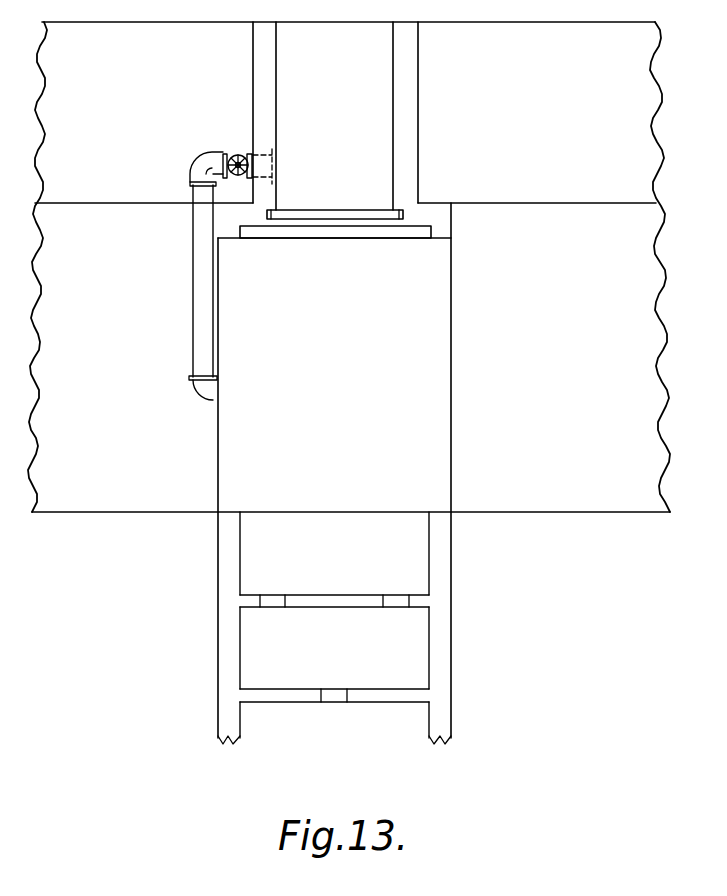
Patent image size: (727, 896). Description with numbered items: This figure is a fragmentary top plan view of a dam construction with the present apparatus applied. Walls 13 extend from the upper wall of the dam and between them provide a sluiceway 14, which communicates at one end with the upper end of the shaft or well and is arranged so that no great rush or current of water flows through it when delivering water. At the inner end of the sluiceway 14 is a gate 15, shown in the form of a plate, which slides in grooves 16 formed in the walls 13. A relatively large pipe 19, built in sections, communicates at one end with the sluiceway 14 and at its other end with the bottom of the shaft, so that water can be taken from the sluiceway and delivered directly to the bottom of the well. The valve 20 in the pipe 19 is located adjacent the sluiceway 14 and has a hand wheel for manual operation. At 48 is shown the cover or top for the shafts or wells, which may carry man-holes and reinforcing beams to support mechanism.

The walls 13 is at (267, 98).
The sluiceway 14 is at (357, 98).
The gate 15 is at (320, 210).
The grooves 16 is at (263, 217).
The pipe 19 is at (200, 273).
The valve 20 is at (238, 150).
The cover 48 is at (403, 303).